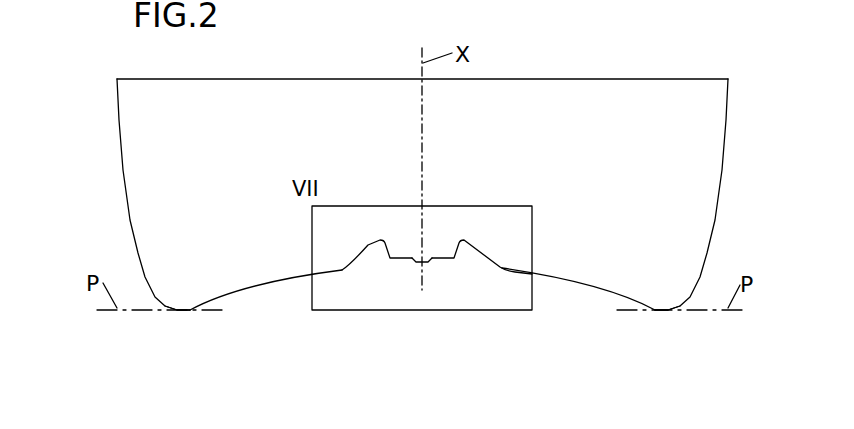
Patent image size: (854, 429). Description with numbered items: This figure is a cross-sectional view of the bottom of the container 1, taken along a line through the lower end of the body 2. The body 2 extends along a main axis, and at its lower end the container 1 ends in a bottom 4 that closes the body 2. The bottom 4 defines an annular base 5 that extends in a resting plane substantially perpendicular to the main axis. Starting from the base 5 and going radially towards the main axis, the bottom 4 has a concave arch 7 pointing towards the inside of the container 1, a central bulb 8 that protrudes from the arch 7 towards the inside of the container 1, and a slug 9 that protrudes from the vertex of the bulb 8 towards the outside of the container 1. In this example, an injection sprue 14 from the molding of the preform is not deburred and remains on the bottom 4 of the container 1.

The container 1 is at (106, 90).
The body 2 is at (730, 80).
The bottom 4 is at (256, 312).
The annular base 5 is at (188, 312).
The concave arch 7 is at (585, 283).
The central bulb 8 is at (482, 250).
The slug 9 is at (389, 260).
The injection sprue 14 is at (427, 263).